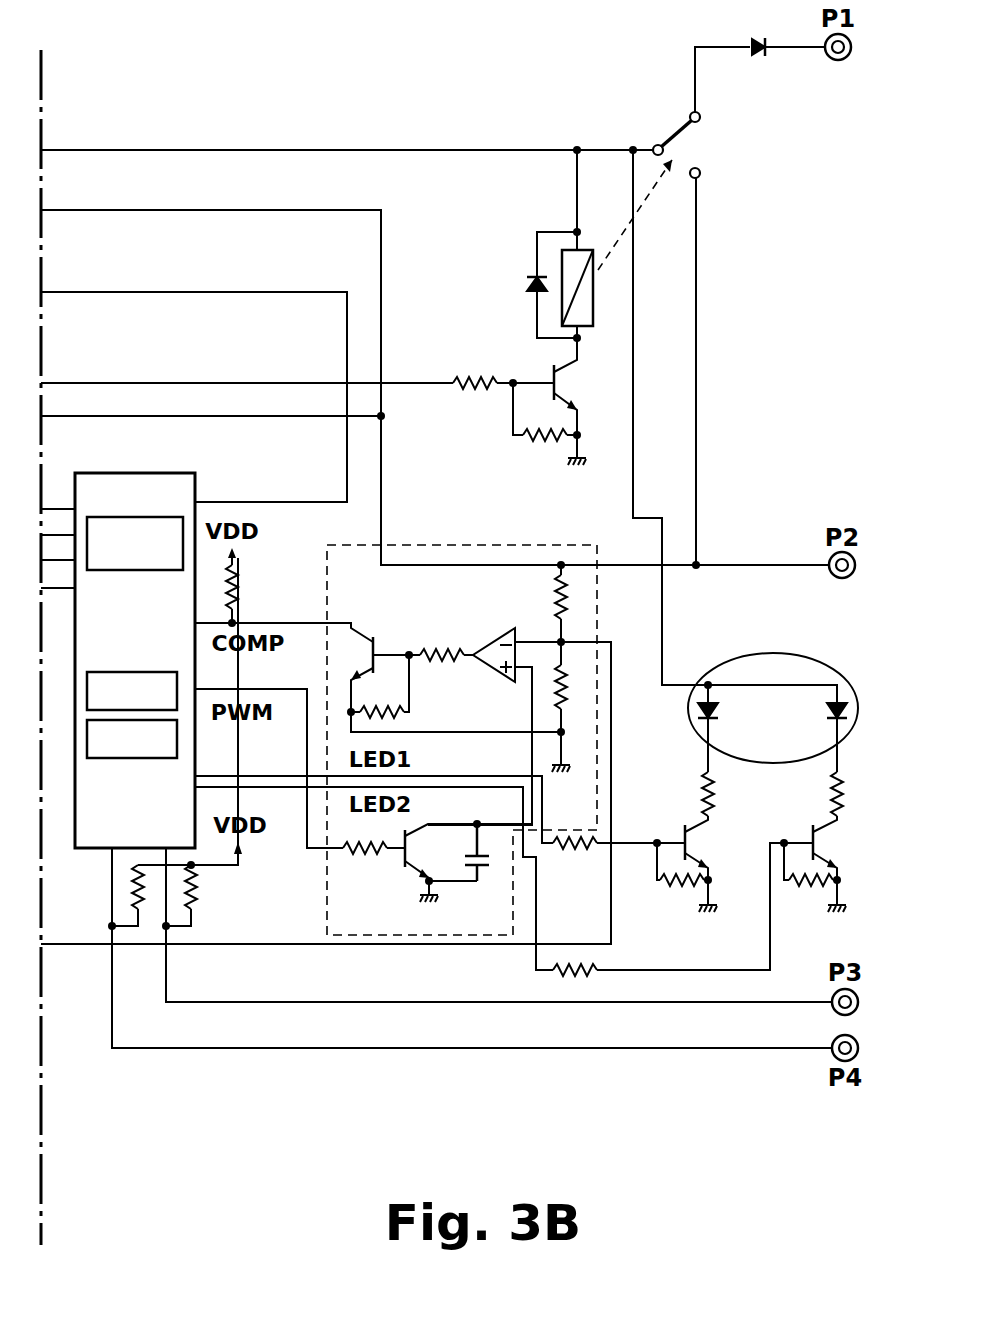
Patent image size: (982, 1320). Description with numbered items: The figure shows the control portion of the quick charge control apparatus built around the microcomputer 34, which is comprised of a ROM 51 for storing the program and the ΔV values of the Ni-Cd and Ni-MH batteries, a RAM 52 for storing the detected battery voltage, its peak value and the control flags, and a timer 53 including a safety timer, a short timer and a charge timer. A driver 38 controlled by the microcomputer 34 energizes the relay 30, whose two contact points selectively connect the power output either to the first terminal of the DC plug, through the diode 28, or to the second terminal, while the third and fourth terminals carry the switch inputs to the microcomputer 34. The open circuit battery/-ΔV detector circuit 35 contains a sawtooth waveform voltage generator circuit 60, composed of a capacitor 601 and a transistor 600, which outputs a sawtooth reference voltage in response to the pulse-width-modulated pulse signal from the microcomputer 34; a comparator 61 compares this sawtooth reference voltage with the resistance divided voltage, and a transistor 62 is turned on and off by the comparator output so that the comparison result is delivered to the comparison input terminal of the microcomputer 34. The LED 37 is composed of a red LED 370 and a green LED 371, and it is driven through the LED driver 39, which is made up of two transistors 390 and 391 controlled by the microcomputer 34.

The diode 28 is at (761, 60).
The relay 30 is at (670, 134).
The microcomputer 34 is at (168, 652).
The open circuit battery/-ΔV detector circuit 35 is at (327, 592).
The LED 37 is at (767, 461).
The driver 38 is at (581, 390).
The LED driver 39 is at (765, 869).
The ROM 51 is at (105, 671).
The RAM 52 is at (160, 760).
The timer 53 is at (166, 516).
The sawtooth waveform voltage generator circuit 60 is at (468, 875).
The comparator 61 is at (497, 672).
The transistor 62 is at (444, 684).
The red LED 370 is at (700, 727).
The green LED 371 is at (848, 710).
The transistor 390 is at (699, 842).
The transistor 391 is at (829, 842).
The transistor 600 is at (468, 861).
The capacitor 601 is at (491, 862).